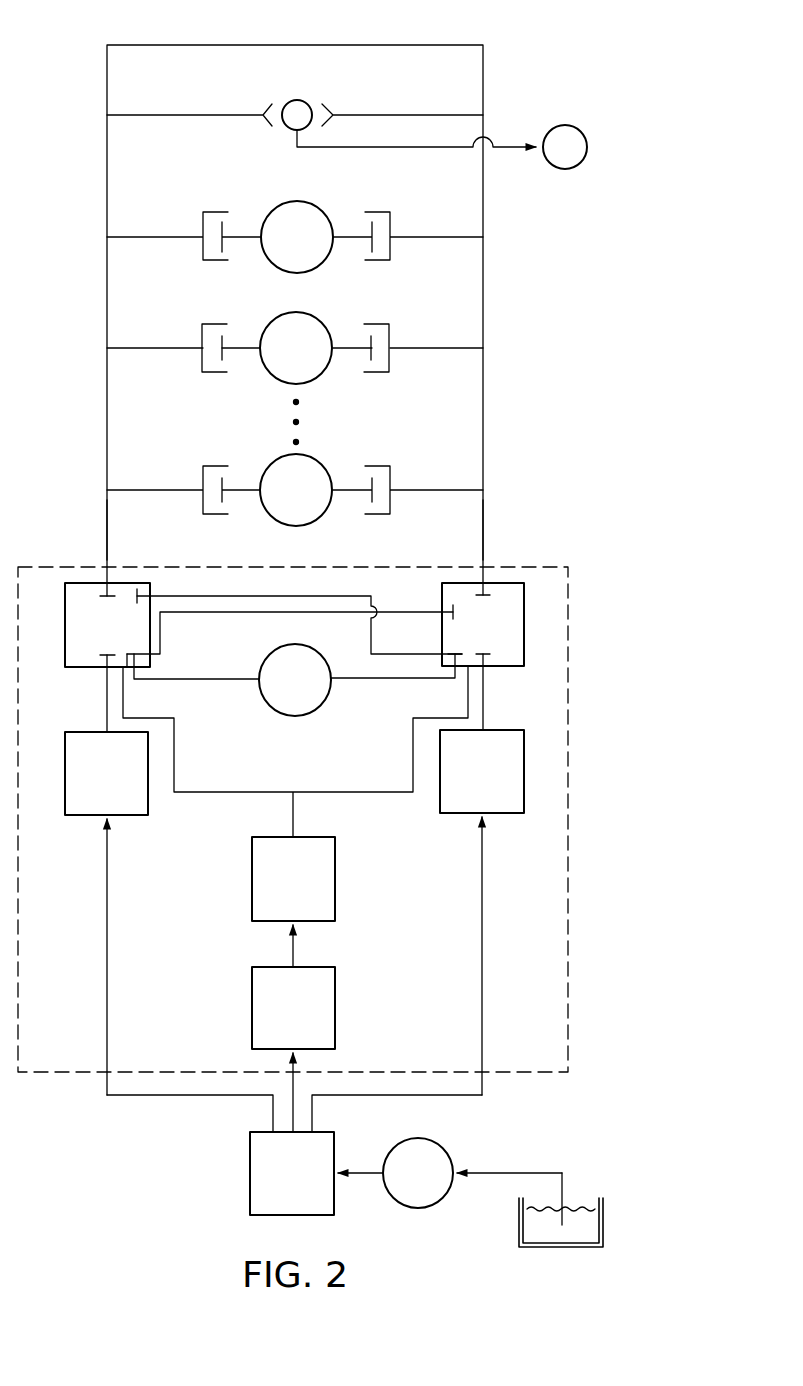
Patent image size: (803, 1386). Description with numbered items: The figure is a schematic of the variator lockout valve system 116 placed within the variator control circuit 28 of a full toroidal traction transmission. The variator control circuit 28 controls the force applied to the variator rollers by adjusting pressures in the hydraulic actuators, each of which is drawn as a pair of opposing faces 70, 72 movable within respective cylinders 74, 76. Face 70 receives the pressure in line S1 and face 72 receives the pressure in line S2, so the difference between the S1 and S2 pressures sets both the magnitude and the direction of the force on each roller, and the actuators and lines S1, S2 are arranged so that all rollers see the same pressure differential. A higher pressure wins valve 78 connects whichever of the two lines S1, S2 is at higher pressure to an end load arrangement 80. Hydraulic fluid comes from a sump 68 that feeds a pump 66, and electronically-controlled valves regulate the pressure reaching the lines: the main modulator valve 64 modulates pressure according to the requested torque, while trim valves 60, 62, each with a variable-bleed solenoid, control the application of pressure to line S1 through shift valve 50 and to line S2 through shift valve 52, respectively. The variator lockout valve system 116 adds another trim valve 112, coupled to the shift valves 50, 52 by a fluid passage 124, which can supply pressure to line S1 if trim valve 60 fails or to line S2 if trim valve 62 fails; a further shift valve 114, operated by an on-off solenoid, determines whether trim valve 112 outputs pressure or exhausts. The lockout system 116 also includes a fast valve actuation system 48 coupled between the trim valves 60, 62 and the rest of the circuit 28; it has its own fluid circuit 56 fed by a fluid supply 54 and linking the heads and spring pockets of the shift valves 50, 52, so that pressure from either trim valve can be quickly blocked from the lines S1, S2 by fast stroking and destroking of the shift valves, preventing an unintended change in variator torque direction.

The variator control circuit 28 is at (606, 204).
The fluid line S1 is at (107, 522).
The fluid line S2 is at (483, 520).
The higher pressure wins valve 78 is at (323, 105).
The end load arrangement 80 is at (565, 125).
The opposing face 70 is at (224, 332).
The opposing face 72 is at (367, 333).
The cylinder 74 is at (202, 362).
The cylinder 76 is at (389, 362).
The variator lockout valve system 116 is at (568, 602).
The shift valve 50 is at (93, 638).
The shift valve 52 is at (469, 638).
The fluid supply 54 is at (281, 693).
The fluid circuit 56 is at (190, 624).
The fast valve actuation system 48 is at (382, 694).
The trim valve 60 is at (93, 787).
The trim valve 62 is at (468, 785).
The trim valve 112 is at (276, 892).
The shift valve 114 is at (276, 1021).
The fluid passage 124 is at (366, 794).
The main modulator valve 64 is at (278, 1186).
The pump 66 is at (404, 1186).
The sump 68 is at (606, 1218).